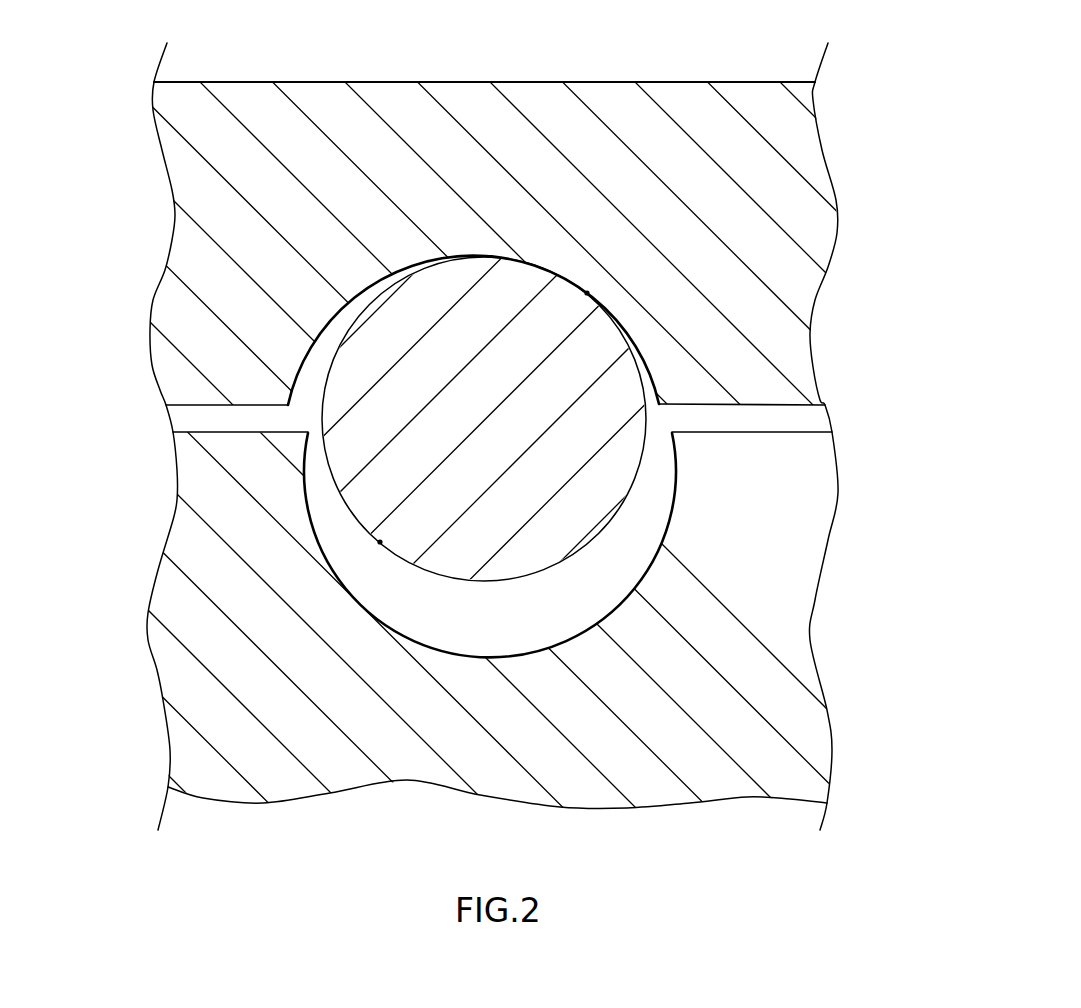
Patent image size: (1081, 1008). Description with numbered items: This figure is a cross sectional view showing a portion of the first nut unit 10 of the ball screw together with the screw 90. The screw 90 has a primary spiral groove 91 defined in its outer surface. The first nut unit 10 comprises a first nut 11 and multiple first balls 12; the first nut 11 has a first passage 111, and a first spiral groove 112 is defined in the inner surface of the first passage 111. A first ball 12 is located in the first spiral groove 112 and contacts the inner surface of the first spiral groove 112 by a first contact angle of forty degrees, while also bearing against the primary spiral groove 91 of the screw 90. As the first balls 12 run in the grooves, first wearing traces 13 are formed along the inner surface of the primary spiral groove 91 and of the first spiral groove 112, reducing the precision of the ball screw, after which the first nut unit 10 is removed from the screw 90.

The first nut unit 10 is at (1005, 88).
The first nut 11 is at (727, 132).
The first passage 111 is at (208, 418).
The first spiral groove 112 is at (370, 287).
The first ball 12 is at (577, 493).
The first wearing trace 13 is at (380, 542).
The screw 90 is at (205, 702).
The primary spiral groove 91 is at (427, 573).